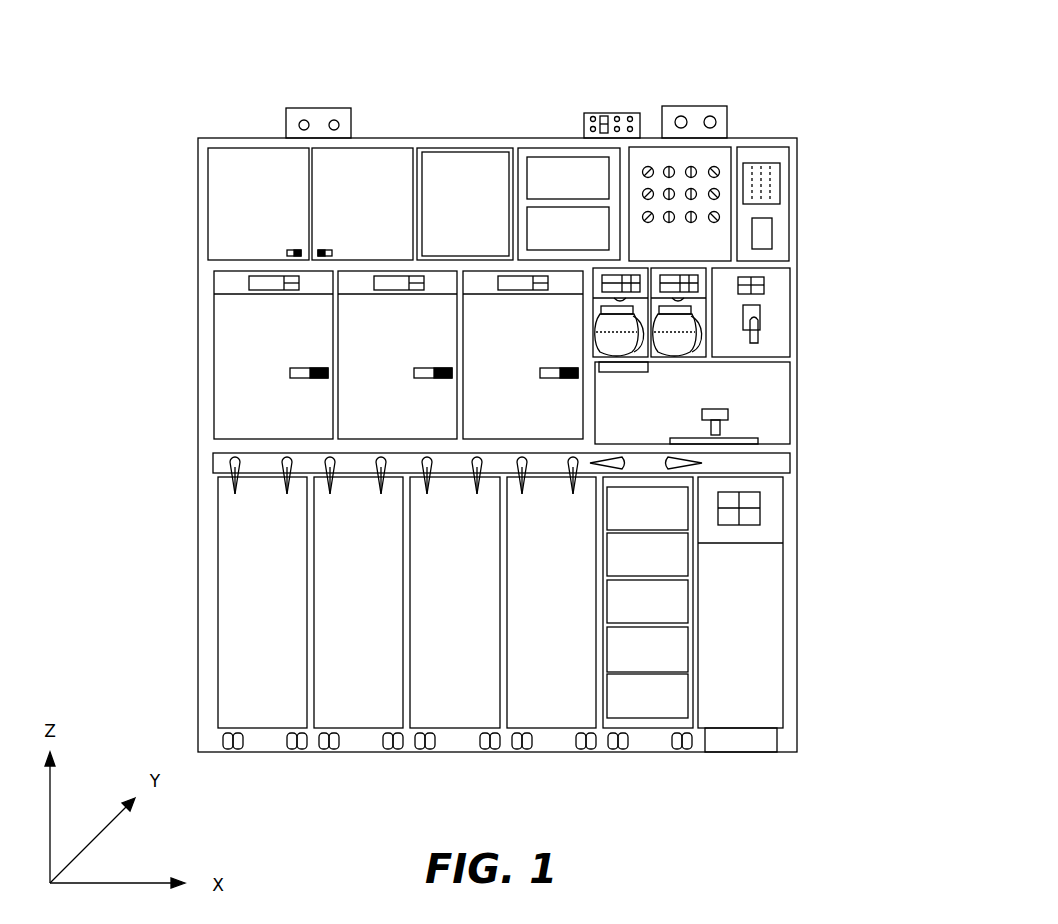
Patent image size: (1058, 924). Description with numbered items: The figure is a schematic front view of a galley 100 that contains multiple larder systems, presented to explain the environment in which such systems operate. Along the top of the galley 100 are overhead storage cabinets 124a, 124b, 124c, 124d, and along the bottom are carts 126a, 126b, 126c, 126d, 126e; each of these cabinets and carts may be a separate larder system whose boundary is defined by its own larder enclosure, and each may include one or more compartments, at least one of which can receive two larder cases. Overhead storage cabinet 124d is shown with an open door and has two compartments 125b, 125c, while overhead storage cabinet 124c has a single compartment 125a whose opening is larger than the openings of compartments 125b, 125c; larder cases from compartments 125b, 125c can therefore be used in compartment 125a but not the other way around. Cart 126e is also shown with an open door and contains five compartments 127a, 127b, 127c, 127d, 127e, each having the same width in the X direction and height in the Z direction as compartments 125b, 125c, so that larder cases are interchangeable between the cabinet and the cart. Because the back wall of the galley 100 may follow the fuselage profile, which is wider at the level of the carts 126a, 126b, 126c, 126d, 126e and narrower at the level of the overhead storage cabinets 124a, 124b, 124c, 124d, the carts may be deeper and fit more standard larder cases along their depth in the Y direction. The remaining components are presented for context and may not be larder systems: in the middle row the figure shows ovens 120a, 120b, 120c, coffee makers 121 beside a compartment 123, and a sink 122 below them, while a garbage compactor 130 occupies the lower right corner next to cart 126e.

The galley 100 is at (778, 80).
The oven compartment 120a is at (298, 336).
The oven compartment 120b is at (422, 336).
The oven compartment 120c is at (548, 336).
The coffee makers 121 is at (676, 332).
The sink 122 is at (733, 418).
The faucet compartment 123 is at (772, 314).
The overhead storage cabinet 124a is at (284, 214).
The overhead storage cabinet 124b is at (387, 214).
The overhead storage cabinet 124c is at (465, 159).
The overhead storage cabinet 124d is at (569, 159).
The compartment 125a is at (490, 214).
The compartment 125b is at (593, 188).
The compartment 125c is at (593, 238).
The cart 126a is at (287, 612).
The cart 126b is at (383, 612).
The cart 126c is at (480, 612).
The cart 126d is at (576, 612).
The cart 126e is at (648, 639).
The compartment 127a is at (672, 518).
The compartment 127b is at (672, 565).
The compartment 127c is at (672, 612).
The compartment 127d is at (672, 658).
The compartment 127e is at (672, 707).
The garbage compactor 130 is at (721, 612).